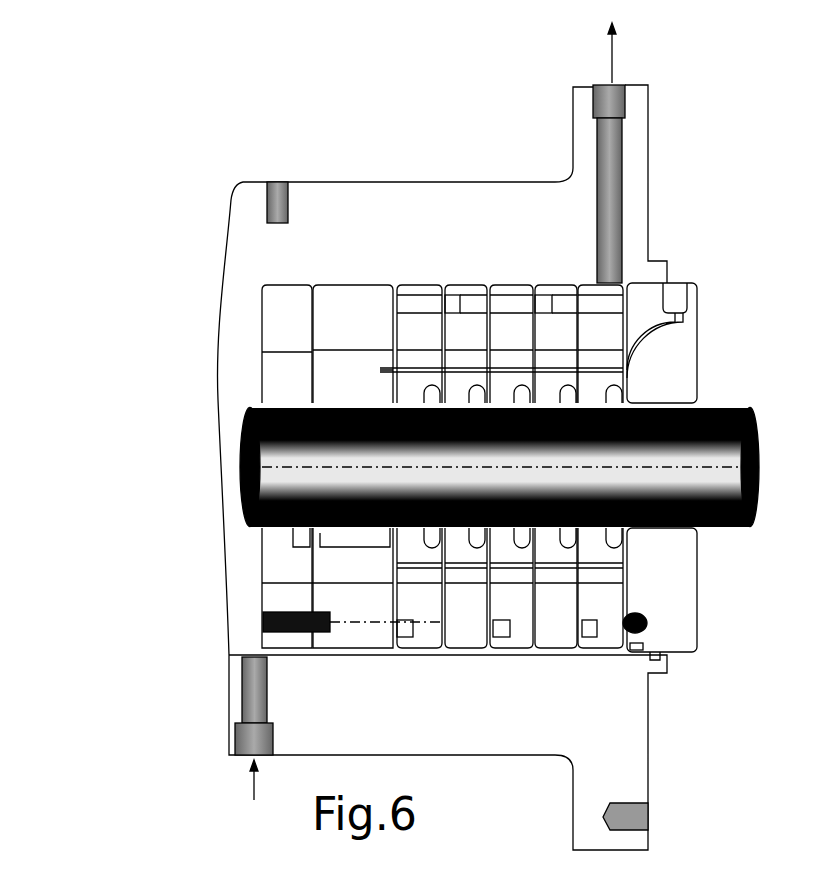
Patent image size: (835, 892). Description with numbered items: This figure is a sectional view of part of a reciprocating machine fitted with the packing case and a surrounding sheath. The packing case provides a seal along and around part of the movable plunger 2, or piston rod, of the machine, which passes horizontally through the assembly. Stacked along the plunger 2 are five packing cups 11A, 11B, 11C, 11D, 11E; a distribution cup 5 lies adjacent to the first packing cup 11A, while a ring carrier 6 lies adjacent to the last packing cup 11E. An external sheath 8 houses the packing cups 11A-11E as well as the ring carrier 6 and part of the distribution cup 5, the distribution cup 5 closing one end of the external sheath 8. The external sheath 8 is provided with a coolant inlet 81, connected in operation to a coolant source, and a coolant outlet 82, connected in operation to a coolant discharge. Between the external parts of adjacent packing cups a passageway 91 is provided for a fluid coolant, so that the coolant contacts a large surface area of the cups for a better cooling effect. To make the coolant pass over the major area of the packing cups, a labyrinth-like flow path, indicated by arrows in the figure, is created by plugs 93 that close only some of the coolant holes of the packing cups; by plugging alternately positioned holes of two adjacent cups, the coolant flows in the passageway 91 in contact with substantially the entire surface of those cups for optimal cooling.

The plunger 2 is at (752, 482).
The distribution cup 5 is at (680, 377).
The ring carrier 6 is at (343, 290).
The external sheath 8 is at (627, 695).
The first packing cup 11A is at (617, 337).
The packing cup 11B is at (558, 287).
The packing cup 11C is at (502, 287).
The packing cup 11D is at (455, 288).
The last packing cup 11E is at (428, 288).
The coolant inlet 81 is at (257, 685).
The coolant outlet 82 is at (613, 140).
The passageway 91 is at (443, 593).
The plugs 93 is at (450, 302).